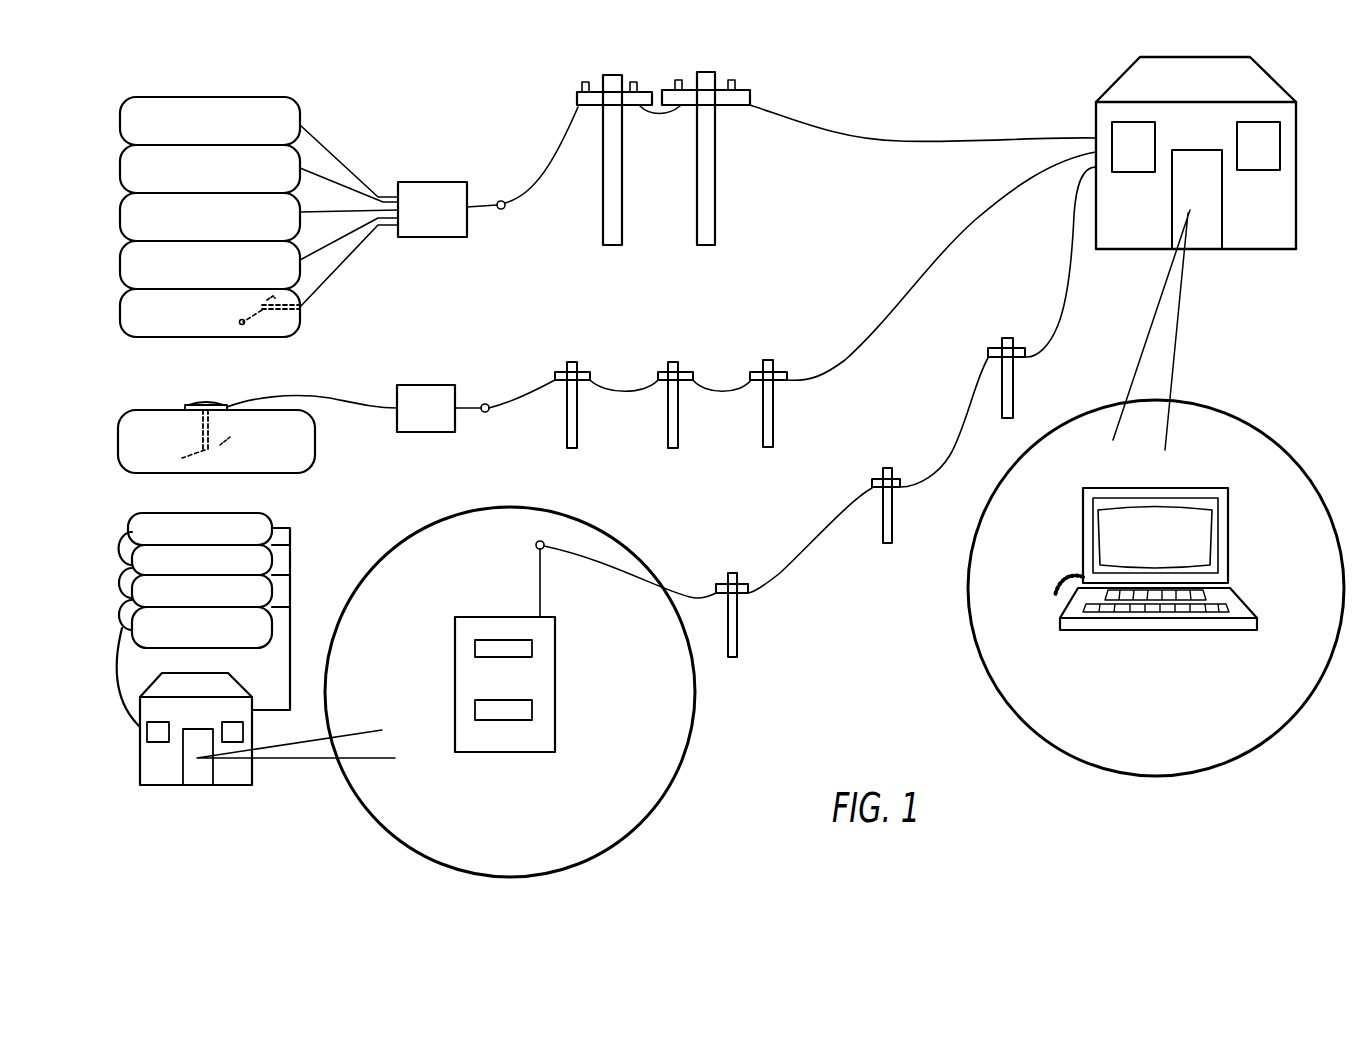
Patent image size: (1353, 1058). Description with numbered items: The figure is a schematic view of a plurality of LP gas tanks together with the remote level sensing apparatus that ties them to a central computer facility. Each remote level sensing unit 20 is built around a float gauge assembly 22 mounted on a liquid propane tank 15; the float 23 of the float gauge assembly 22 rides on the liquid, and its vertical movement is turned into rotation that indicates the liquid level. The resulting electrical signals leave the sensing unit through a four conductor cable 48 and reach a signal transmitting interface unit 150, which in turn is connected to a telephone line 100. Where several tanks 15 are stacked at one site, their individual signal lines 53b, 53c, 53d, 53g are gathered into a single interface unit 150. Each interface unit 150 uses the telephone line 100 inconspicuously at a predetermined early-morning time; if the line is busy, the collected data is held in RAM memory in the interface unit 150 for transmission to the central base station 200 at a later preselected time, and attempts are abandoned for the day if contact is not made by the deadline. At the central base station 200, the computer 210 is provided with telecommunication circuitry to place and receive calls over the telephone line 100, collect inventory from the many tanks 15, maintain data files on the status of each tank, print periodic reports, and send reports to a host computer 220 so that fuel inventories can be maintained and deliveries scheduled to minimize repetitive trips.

The liquid propane tank 15 is at (223, 210).
The remote level sensing unit 20 is at (306, 323).
The float gauge assembly 22 is at (210, 455).
The float 23 is at (255, 328).
The four conductor cable 48 is at (327, 397).
The signal line 53b is at (357, 244).
The signal line 53c is at (342, 178).
The signal line 53d is at (325, 120).
The signal line 53g is at (338, 277).
The telephone line 100 is at (540, 168).
The signal transmitting interface unit 150 is at (438, 193).
The central base station 200 is at (1150, 73).
The computer 210 is at (1234, 570).
The host computer 220 is at (557, 645).